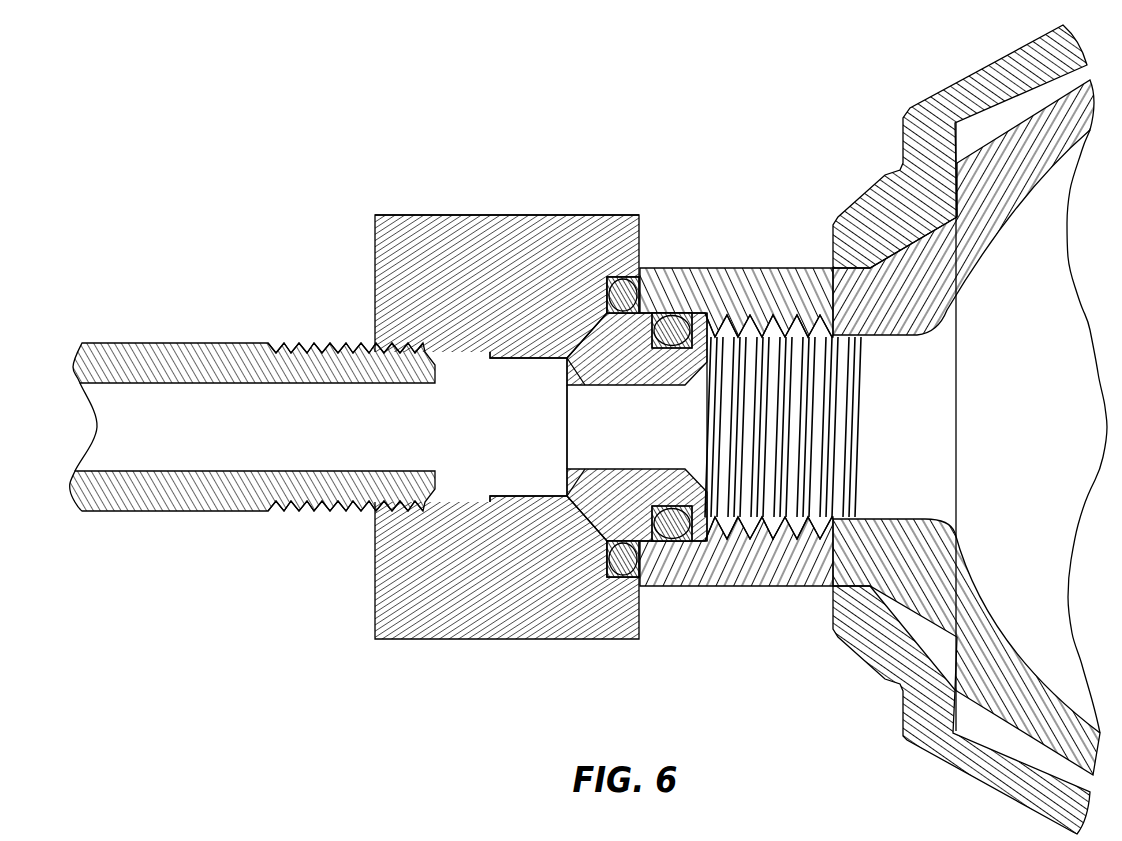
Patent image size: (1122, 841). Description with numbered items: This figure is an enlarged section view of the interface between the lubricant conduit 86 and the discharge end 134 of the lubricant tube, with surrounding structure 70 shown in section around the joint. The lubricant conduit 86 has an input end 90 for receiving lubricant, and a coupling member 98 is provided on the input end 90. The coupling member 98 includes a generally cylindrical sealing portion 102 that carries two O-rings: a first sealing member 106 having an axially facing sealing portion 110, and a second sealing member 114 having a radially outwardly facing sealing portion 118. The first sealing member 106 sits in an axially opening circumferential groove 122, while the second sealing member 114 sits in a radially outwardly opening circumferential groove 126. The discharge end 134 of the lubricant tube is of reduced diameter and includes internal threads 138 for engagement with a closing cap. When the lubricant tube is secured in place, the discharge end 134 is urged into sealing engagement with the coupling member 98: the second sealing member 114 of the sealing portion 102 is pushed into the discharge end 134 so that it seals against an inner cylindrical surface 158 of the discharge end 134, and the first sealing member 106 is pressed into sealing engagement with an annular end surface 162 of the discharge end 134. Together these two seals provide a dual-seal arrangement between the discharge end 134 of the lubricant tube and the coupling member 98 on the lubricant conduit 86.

The housing body 70 is at (875, 180).
The lubricant conduit 86 is at (118, 350).
The input end 90 is at (337, 347).
The coupling member 98 is at (373, 243).
The sealing portion 102 is at (557, 215).
The first sealing member 106 is at (627, 277).
The axially facing sealing portion 110 is at (645, 285).
The second sealing member 114 is at (674, 318).
The radially outwardly facing sealing portion 118 is at (686, 292).
The axially opening circumferential groove 122 is at (623, 580).
The radially outwardly opening circumferential groove 126 is at (674, 588).
The discharge end 134 is at (800, 575).
The internal threads 138 is at (725, 588).
The inner cylindrical surface 158 is at (770, 278).
The annular end surface 162 is at (567, 360).